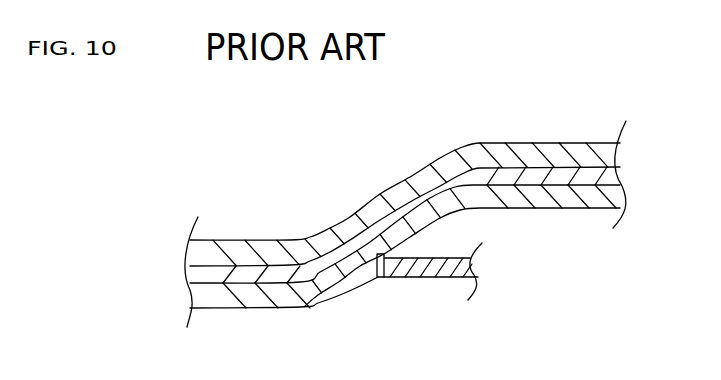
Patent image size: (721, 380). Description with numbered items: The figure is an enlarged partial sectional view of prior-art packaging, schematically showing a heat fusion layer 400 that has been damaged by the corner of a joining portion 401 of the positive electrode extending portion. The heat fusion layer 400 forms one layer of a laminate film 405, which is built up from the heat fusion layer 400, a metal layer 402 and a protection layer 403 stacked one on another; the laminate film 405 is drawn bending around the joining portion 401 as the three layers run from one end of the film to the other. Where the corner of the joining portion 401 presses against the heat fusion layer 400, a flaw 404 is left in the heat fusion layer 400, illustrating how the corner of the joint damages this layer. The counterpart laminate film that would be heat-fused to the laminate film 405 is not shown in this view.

The heat fusion layer 400 is at (358, 242).
The joining portion of the positive electrode extending portion 401 is at (430, 278).
The metal layer 402 is at (188, 277).
The protection layer 403 is at (190, 247).
The flaw 404 is at (378, 277).
The laminate film 405 is at (283, 227).